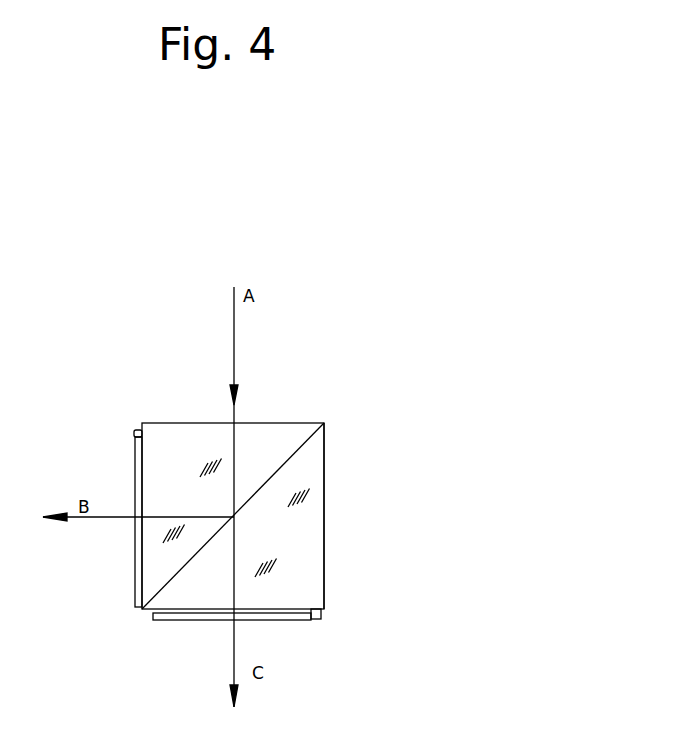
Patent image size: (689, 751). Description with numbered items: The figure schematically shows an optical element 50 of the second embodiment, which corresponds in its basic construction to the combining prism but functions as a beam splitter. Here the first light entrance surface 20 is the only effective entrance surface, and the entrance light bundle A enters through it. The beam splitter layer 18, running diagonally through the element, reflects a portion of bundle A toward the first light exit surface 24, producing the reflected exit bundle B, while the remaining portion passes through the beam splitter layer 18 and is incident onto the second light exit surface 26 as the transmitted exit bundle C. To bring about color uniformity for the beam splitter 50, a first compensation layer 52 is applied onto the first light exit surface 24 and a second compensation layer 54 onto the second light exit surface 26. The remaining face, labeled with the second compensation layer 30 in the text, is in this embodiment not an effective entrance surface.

The optical element 50 is at (363, 312).
The first light entrance surface 20 is at (283, 422).
The beam splitter layer 18 is at (293, 455).
The second compensation layer 30 is at (324, 573).
The first light exit surface 24 is at (134, 436).
The first compensation layer 52 is at (133, 452).
The second compensation layer 54 is at (178, 622).
The second light exit surface 26 is at (313, 620).